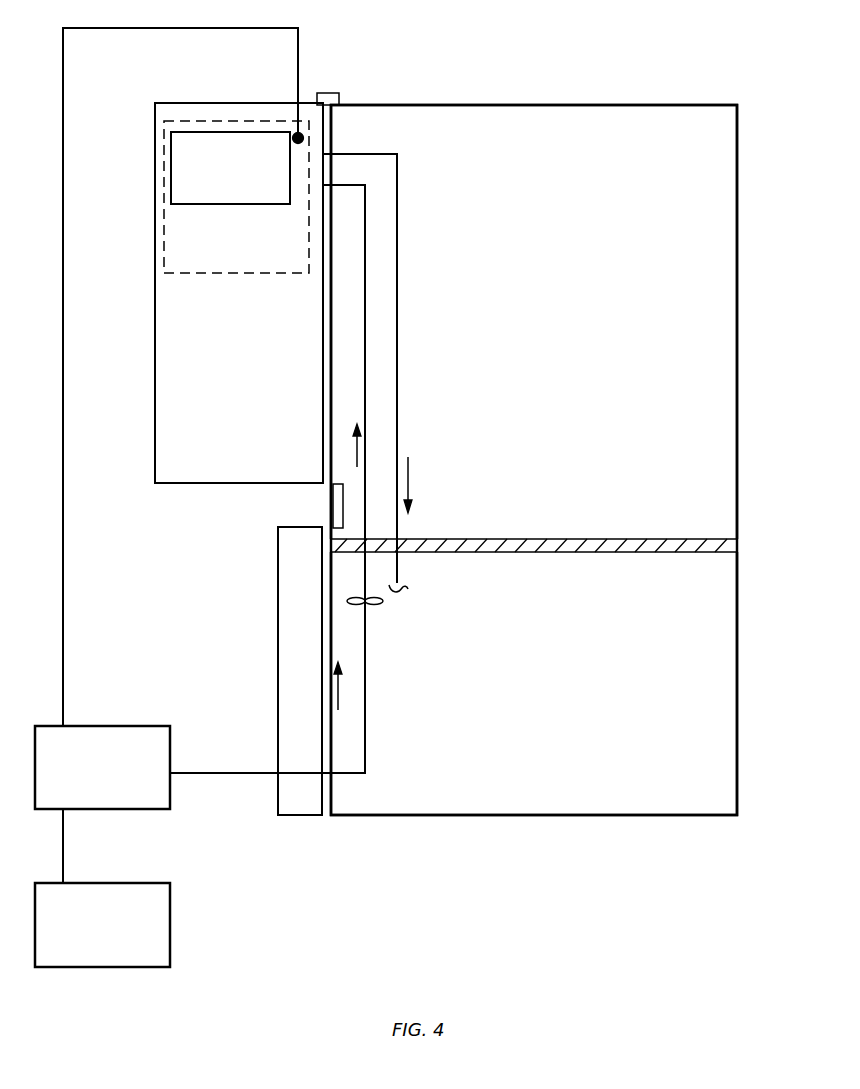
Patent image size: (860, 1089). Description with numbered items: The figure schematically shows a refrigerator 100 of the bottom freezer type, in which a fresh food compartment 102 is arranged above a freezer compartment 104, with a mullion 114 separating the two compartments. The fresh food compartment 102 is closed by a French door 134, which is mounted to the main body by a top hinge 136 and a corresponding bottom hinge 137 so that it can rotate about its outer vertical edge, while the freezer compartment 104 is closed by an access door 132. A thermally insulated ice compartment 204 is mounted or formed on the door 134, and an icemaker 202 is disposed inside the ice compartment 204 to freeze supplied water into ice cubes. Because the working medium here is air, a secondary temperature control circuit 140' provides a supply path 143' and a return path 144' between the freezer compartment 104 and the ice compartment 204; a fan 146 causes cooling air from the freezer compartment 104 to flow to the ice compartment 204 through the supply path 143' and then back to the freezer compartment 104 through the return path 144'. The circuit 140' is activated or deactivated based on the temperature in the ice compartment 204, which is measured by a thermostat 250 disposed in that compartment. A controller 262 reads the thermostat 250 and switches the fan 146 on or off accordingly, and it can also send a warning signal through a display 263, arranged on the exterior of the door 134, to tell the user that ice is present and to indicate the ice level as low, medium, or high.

The refrigerator 100 is at (632, 60).
The fresh food compartment 102 is at (534, 322).
The freezer compartment 104 is at (534, 683).
The mullion 114 is at (593, 539).
The access door 132 is at (310, 671).
The French door 134 is at (239, 293).
The top hinge 136 is at (328, 93).
The bottom hinge 137 is at (338, 503).
The secondary temperature control circuit 140' is at (224, 609).
The supply path 143' is at (405, 410).
The return path 144' is at (441, 455).
The fan 146 is at (383, 603).
The icemaker 202 is at (171, 146).
The ice compartment 204 is at (213, 120).
The thermostat 250 is at (304, 139).
The controller 262 is at (102, 767).
The display 263 is at (102, 925).